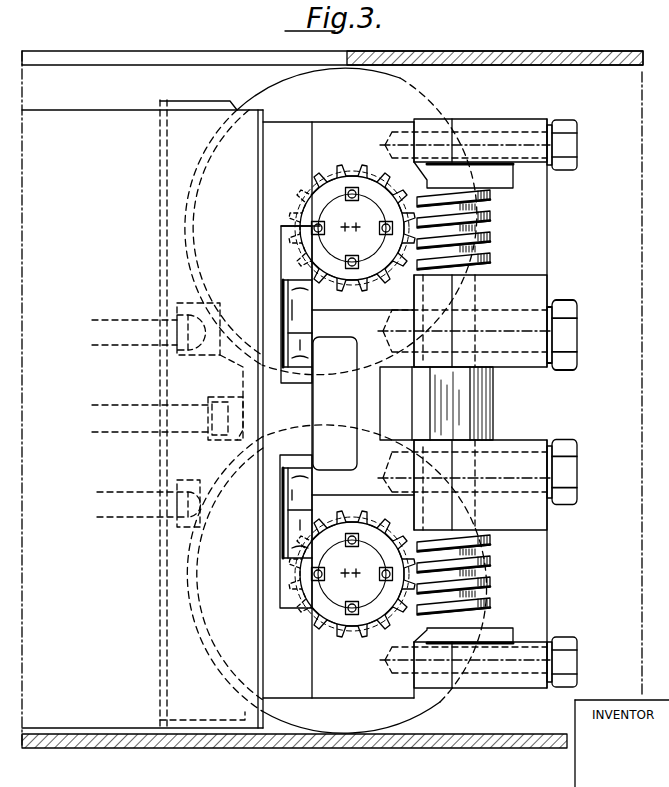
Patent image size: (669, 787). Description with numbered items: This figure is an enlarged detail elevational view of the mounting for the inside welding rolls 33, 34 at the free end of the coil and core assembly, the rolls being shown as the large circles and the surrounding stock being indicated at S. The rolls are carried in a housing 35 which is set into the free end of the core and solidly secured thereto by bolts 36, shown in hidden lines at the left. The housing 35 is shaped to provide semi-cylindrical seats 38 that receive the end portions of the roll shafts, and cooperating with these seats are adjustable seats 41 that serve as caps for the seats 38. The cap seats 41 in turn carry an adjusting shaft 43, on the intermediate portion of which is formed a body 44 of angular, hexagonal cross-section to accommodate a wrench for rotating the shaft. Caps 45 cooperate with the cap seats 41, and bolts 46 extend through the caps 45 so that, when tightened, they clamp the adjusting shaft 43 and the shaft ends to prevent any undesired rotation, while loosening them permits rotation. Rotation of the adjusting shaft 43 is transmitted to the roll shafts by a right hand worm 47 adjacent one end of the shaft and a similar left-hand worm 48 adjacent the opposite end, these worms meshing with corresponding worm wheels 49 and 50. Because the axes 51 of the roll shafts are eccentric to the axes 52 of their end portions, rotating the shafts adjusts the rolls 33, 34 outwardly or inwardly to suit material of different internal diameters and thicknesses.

The sheet stock / work rail S is at (176, 57).
The inside welding roll 33 is at (331, 221).
The inside welding roll 34 is at (350, 718).
The housing 35 is at (200, 729).
The bolts 36 is at (140, 332).
The semi-cylindrical seats 38 is at (405, 408).
The adjustable seats 41 is at (437, 122).
The adjusting shaft 43 is at (483, 303).
The body 44 is at (486, 408).
The caps 45 is at (507, 129).
The bolts 46 is at (577, 144).
The right hand worm 47 is at (488, 582).
The left-hand worm 48 is at (488, 223).
The worm wheel 49 is at (341, 162).
The worm wheel 50 is at (342, 632).
The axes of the shafts 51 is at (345, 230).
The axes of the end portions 52 is at (357, 230).